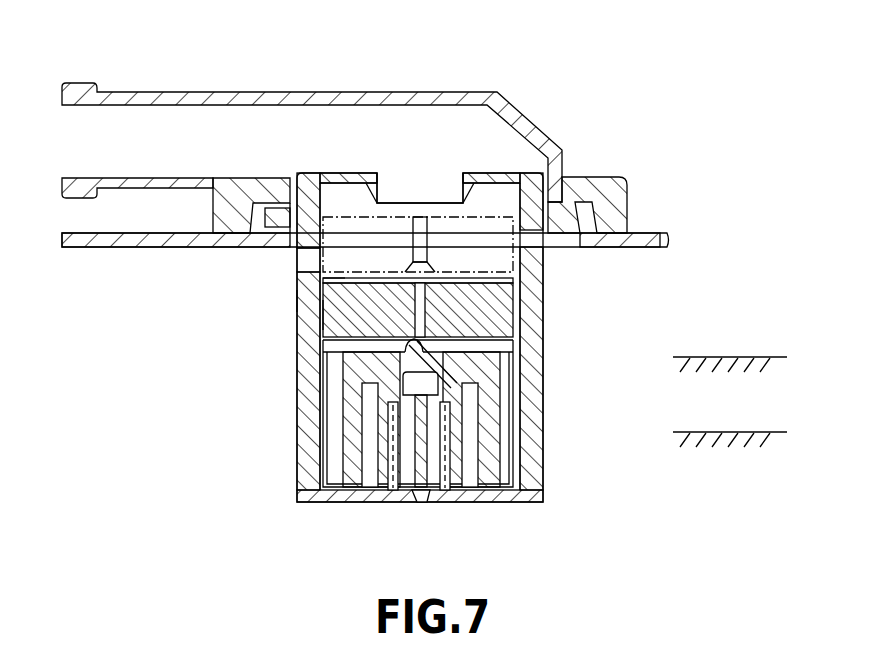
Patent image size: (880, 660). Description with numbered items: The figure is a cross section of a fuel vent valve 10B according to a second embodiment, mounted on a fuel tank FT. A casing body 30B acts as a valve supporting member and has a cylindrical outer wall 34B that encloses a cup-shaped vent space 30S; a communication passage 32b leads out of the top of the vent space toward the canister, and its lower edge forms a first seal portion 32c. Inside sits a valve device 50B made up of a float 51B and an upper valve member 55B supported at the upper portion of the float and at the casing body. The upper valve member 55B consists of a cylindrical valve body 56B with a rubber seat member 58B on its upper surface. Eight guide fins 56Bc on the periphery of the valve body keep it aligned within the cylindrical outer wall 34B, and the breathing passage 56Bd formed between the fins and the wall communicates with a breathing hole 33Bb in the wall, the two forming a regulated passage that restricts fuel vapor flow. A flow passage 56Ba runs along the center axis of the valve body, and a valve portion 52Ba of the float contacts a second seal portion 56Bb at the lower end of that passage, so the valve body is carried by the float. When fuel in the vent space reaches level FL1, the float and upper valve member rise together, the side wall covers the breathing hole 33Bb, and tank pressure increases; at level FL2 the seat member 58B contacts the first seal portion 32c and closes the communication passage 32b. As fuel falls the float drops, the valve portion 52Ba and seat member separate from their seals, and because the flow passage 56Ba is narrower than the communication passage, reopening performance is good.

The fuel vent valve 10B is at (632, 123).
The casing body 30B is at (297, 341).
The vent space 30S is at (343, 220).
The communication passage 32b is at (408, 185).
The first seal portion 32c is at (372, 195).
The breathing hole 33Bb is at (305, 257).
The cylindrical outer wall 34B is at (297, 300).
The valve device 50B is at (607, 360).
The float 51B is at (493, 397).
The valve portion 52Ba is at (407, 370).
The upper valve member 55B is at (502, 93).
The valve body 56B is at (483, 318).
The flow passage 56Ba is at (425, 292).
The second seal portion 56Bb is at (406, 346).
The guide fins 56Bc is at (323, 315).
The breathing passage 56Bd is at (330, 270).
The seat member 58B is at (513, 282).
The fuel tank FT is at (650, 233).
The predetermined fuel level FL1 is at (732, 432).
The predetermined fuel level FL2 is at (730, 357).